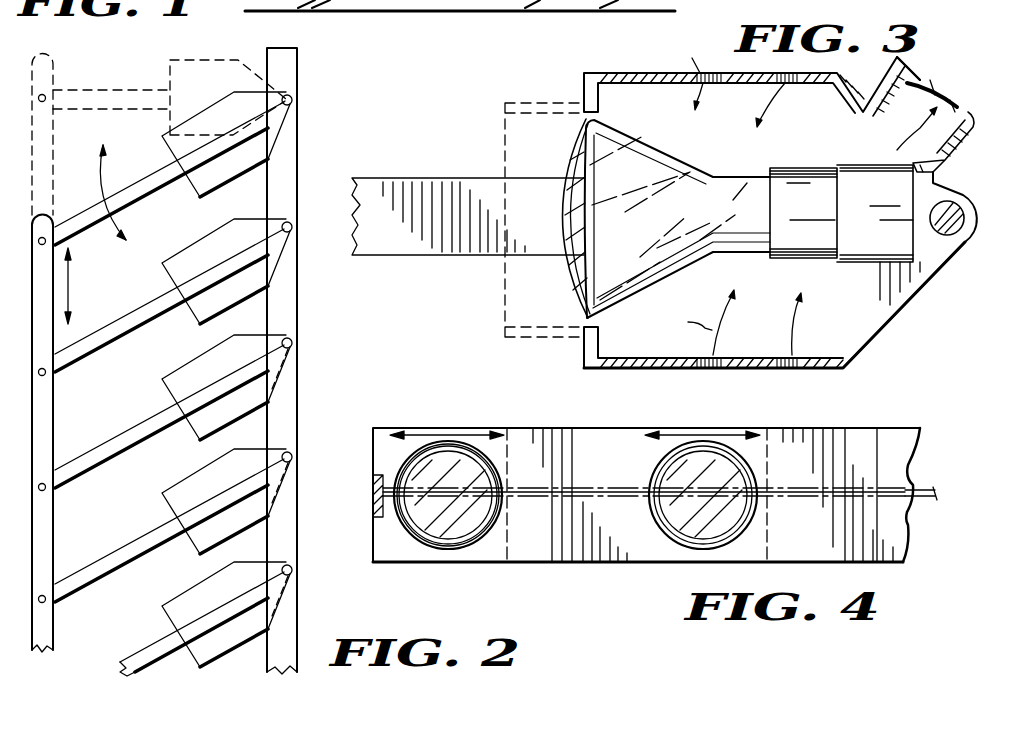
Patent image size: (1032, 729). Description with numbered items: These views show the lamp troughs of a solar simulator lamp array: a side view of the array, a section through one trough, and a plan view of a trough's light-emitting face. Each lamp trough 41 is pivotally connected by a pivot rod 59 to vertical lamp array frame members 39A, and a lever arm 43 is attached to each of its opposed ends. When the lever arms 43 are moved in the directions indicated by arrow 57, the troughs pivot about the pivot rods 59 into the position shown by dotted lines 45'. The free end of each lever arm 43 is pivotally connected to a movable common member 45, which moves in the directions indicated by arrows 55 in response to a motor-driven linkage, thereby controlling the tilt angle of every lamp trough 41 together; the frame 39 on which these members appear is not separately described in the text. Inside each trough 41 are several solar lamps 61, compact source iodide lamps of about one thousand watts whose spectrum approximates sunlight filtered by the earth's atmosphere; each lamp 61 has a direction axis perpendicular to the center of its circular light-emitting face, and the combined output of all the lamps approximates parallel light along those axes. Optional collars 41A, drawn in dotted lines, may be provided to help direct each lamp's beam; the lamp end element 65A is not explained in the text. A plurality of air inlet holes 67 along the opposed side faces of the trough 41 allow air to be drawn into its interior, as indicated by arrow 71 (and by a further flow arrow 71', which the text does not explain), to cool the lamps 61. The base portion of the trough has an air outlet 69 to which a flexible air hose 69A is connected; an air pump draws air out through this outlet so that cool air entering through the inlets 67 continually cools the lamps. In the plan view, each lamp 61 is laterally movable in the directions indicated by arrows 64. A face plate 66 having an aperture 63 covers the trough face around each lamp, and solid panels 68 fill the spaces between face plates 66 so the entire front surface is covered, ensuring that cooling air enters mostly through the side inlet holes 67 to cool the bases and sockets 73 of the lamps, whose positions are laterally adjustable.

In FIG. 2, the rail 39 is at (283, 64).
In FIG. 4, the rail 39 is at (507, 427).
In FIG. 2, the vertical lamp array frame member 39A is at (292, 304).
In FIG. 2, the lamp trough 41 is at (200, 180).
In FIG. 3, the lamp trough 41 is at (613, 73).
In FIG. 3, the collar 41A is at (558, 78).
In FIG. 2, the lever arm 43 is at (128, 193).
In FIG. 3, the lever arm 43 is at (443, 198).
In FIG. 2, the movable common member 45 is at (61, 434).
In FIG. 2, the dotted lines 45' is at (101, 131).
In FIG. 2, the arrows 55 is at (70, 296).
In FIG. 2, the arrow 57 is at (103, 176).
In FIG. 2, the pivot rod 59 is at (293, 99).
In FIG. 3, the pivot rod 59 is at (953, 237).
In FIG. 4, the pivot rod 59 is at (578, 480).
In FIG. 3, the solar lamp 61 is at (657, 163).
In FIG. 4, the solar lamp 61 is at (483, 480).
In FIG. 4, the aperture 63 is at (500, 525).
In FIG. 4, the arrows 64 is at (438, 430).
In FIG. 3, the end disk 65A is at (570, 293).
In FIG. 4, the face plate 66 is at (665, 553).
In FIG. 3, the air inlet holes 67 is at (702, 88).
In FIG. 4, the solid panels 68 is at (540, 553).
In FIG. 3, the air outlet 69 is at (938, 87).
In FIG. 3, the flexible air hose 69A is at (957, 110).
In FIG. 3, the arrow 71 is at (691, 185).
In FIG. 3, the flow path 71' is at (904, 134).
In FIG. 3, the lamp socket 73 is at (816, 262).